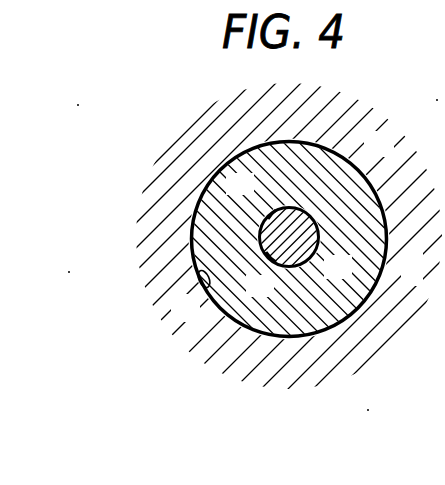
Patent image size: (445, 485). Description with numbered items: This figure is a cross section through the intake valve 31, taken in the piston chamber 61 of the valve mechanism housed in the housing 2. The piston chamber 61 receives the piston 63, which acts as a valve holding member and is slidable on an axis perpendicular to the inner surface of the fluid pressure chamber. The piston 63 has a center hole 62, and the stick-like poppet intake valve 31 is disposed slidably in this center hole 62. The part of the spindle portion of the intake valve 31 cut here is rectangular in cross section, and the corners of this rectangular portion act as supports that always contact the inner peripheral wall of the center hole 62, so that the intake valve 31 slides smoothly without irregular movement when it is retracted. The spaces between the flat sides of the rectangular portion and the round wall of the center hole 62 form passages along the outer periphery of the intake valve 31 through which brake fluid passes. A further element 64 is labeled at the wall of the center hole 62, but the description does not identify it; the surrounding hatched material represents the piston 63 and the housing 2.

The housing 2 is at (420, 282).
The intake valve 31 is at (297, 245).
The piston chamber 61 is at (206, 291).
The center hole 62 is at (268, 257).
The piston 63 is at (340, 188).
The inner wall portion 64 is at (269, 208).